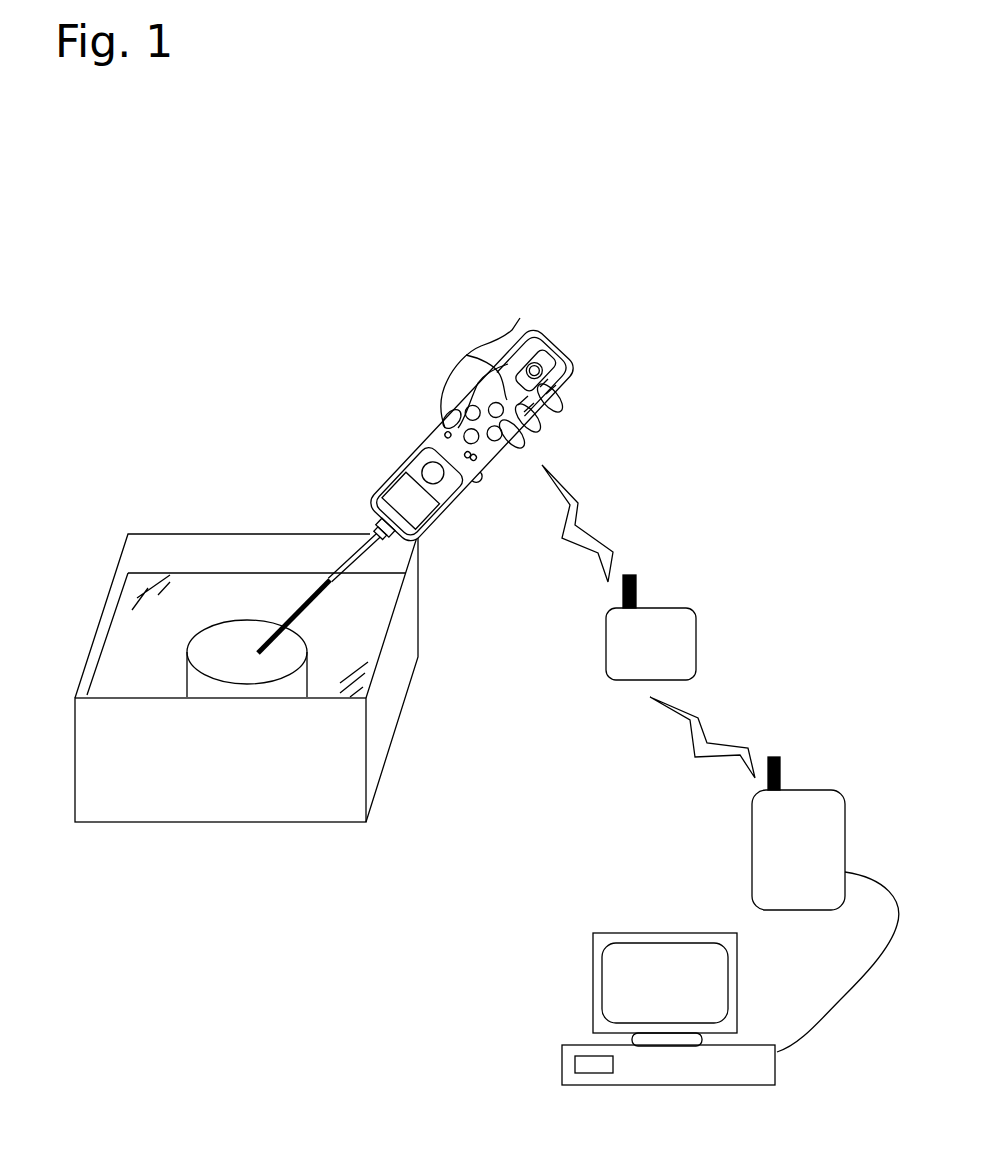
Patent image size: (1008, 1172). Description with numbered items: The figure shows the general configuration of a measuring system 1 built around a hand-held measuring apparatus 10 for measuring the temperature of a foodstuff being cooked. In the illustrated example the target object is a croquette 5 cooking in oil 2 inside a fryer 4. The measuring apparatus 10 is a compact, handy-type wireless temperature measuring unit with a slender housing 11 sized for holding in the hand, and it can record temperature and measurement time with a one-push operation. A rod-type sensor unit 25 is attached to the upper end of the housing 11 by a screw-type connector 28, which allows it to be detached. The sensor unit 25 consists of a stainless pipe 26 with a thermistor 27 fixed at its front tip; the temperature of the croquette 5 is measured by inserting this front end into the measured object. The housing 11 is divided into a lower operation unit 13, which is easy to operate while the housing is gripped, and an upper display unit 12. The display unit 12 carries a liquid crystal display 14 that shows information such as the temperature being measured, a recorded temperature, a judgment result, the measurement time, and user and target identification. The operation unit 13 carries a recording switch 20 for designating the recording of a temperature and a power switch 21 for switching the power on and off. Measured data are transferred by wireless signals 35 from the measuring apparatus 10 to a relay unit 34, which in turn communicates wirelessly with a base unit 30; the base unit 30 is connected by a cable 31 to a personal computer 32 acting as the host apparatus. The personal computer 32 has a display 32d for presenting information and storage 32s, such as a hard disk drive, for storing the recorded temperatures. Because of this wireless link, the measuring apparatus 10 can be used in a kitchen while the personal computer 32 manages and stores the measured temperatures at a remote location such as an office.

The measuring system 1 is at (662, 345).
The oil 2 is at (194, 609).
The fryer 4 is at (148, 530).
The croquette 5 is at (273, 667).
The measuring apparatus 10 is at (473, 501).
The housing 11 is at (418, 443).
The display unit 12 is at (370, 480).
The operation unit 13 is at (428, 408).
The liquid crystal display 14 is at (405, 498).
The recording switch 20 is at (432, 473).
The power switch 21 is at (538, 366).
The sensor unit 25 is at (346, 590).
The stainless pipe 26 is at (327, 582).
The thermistor 27 is at (257, 652).
The screw-type connector 28 is at (368, 512).
The base unit 30 is at (763, 880).
The cable 31 is at (843, 997).
The personal computer 32 is at (645, 932).
The display 32d is at (617, 989).
The storage 32s is at (593, 1067).
The relay unit 34 is at (648, 614).
The wireless signals 35 is at (585, 530).